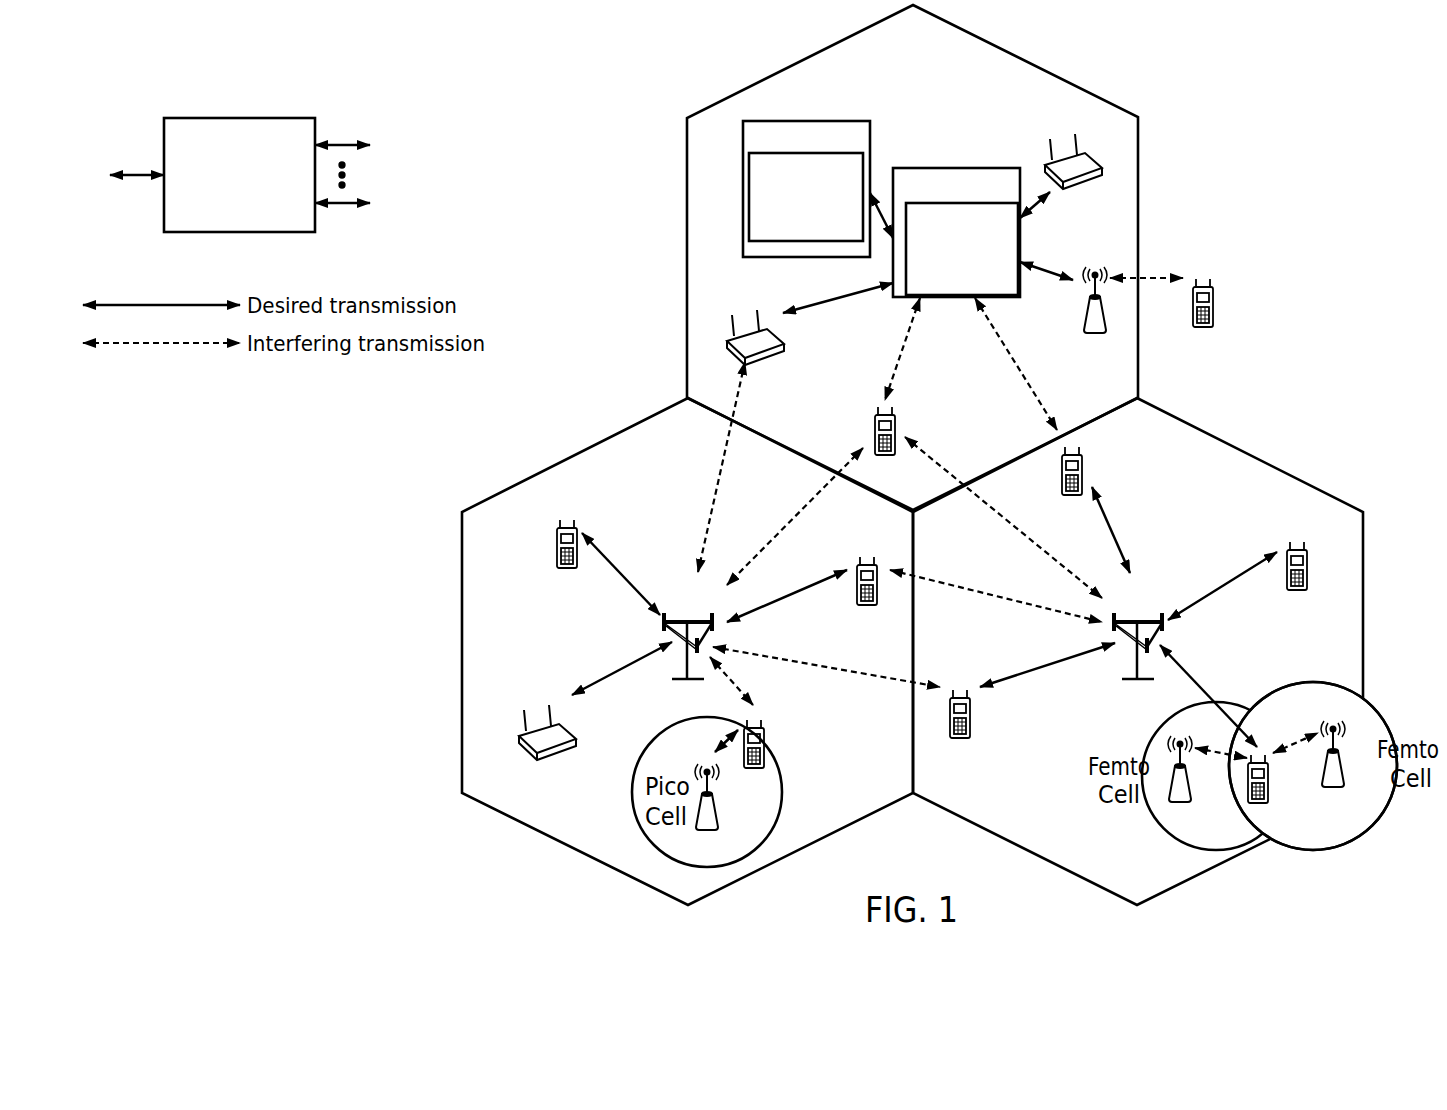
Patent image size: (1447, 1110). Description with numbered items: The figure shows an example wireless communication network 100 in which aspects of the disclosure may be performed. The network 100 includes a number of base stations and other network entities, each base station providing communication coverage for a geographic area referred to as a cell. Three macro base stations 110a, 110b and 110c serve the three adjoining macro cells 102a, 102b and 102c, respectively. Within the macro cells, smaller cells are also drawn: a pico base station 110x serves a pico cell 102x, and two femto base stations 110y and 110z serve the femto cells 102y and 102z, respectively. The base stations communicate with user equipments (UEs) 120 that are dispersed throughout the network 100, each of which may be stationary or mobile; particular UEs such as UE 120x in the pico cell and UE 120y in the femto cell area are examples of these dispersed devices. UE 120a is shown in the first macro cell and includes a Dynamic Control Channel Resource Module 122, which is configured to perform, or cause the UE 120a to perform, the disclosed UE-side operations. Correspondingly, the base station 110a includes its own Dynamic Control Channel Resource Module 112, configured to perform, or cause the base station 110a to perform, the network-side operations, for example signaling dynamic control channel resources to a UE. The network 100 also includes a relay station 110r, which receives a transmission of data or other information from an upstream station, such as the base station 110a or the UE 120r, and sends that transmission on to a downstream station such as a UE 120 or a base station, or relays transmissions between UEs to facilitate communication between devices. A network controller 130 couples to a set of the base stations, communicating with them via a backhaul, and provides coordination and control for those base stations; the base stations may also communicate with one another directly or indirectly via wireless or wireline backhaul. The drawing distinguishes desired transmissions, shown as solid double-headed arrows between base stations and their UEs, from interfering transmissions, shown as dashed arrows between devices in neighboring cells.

The wireless communication network 100 is at (1292, 77).
The macro cell 102a is at (1038, 50).
The macro cell 102b is at (576, 455).
The macro cell 102c is at (1262, 443).
The pico cell 102x is at (652, 735).
The femto cell 102y is at (1148, 744).
The femto cell 102z is at (1322, 668).
The base station 110a is at (941, 234).
The base station 110b is at (684, 619).
The base station 110c is at (1134, 619).
The relay station 110r is at (1084, 313).
The pico base station 110x is at (716, 820).
The femto base station 110y is at (1190, 790).
The femto base station 110z is at (1343, 780).
The Dynamic Control Channel Resource Module 112 is at (912, 296).
The user equipment 120 is at (1078, 150).
The user equipment 120a is at (784, 172).
The user equipment 120r is at (1214, 318).
The user equipment 120x is at (764, 742).
The user equipment 120y is at (1247, 796).
The Dynamic Control Channel Resource Module 122 is at (749, 222).
The network controller 130 is at (235, 116).